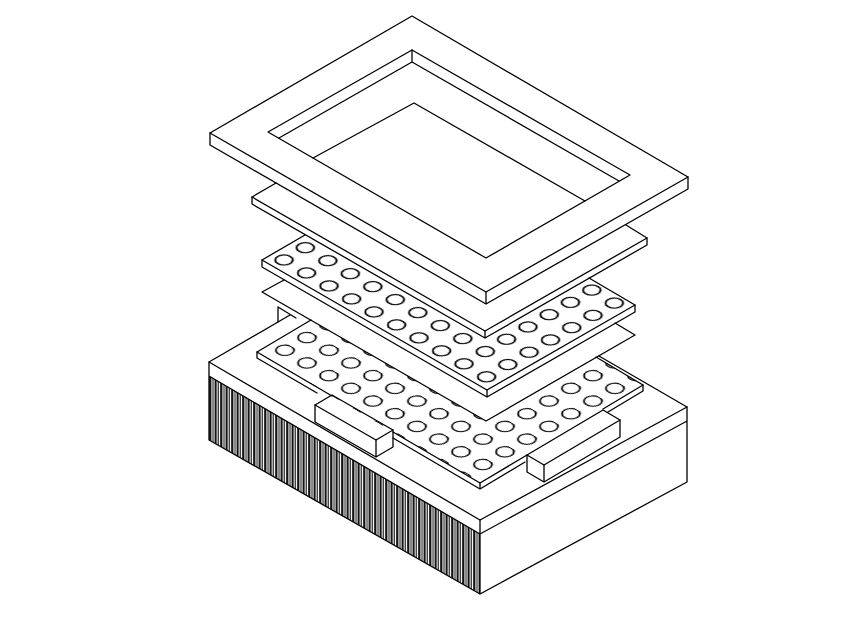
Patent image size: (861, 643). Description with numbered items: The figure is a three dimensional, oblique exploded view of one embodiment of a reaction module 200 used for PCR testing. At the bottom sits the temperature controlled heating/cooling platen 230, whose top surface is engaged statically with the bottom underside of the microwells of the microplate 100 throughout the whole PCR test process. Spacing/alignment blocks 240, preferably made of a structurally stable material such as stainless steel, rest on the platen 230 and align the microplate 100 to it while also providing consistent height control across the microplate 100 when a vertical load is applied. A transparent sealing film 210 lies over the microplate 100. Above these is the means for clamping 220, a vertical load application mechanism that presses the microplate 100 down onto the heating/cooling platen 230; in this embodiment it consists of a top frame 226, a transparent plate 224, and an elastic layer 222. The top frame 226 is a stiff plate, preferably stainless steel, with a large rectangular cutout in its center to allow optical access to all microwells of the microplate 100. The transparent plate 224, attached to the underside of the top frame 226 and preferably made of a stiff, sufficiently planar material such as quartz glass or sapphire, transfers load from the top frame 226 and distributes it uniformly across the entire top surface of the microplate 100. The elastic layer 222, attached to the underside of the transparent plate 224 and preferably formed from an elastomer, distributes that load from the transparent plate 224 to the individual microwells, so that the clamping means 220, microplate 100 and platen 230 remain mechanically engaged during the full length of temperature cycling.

The microplate 100 is at (257, 352).
The reaction module 200 is at (126, 384).
The transparent sealing film 210 is at (260, 292).
The means for clamping 220 is at (698, 305).
The elastic layer 222 is at (262, 260).
The transparent plate 224 is at (252, 197).
The top frame 226 is at (280, 92).
The temperature controlled heating/cooling platen 230 is at (682, 397).
The spacing/alignment blocks 240 is at (343, 428).